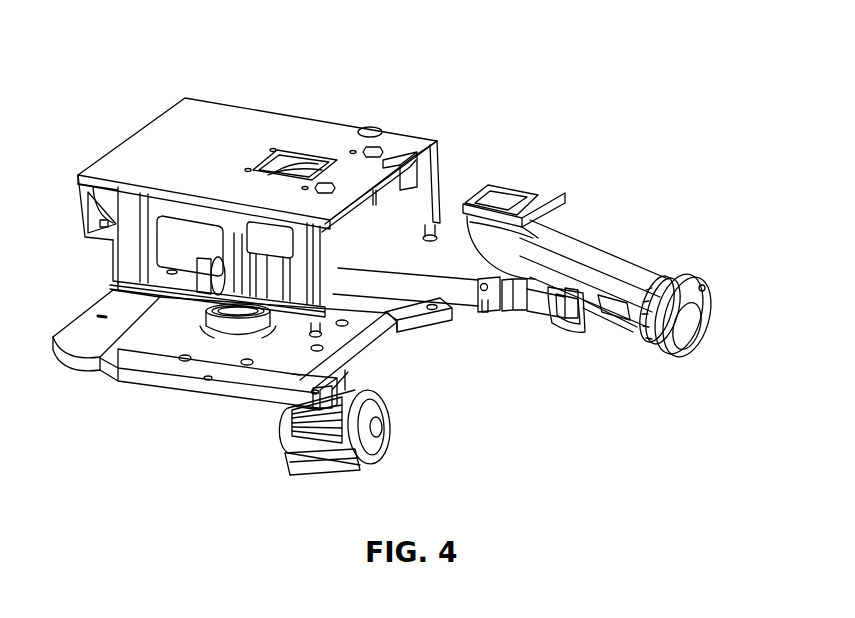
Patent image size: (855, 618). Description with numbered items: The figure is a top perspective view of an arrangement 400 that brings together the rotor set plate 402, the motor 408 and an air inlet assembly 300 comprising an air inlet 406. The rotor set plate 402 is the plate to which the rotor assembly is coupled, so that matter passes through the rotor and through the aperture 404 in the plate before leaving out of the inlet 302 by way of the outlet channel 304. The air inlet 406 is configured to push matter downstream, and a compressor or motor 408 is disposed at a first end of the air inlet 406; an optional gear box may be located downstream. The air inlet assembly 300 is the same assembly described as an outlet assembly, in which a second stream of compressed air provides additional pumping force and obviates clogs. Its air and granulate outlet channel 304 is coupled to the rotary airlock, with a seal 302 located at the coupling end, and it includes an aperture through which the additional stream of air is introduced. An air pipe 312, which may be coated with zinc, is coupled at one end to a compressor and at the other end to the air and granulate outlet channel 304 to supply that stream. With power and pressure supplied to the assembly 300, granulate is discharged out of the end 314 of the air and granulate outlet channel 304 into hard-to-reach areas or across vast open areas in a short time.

The arrangement 400 is at (130, 120).
The rotor set plate 402 is at (220, 123).
The aperture 404 is at (297, 152).
The air inlet 406 is at (615, 313).
The motor 408 is at (373, 443).
The air inlet assembly 300 is at (572, 176).
The seal 302 is at (538, 187).
The air and granulate outlet channel 304 is at (603, 263).
The air pipe 312 is at (515, 310).
The end 314 is at (690, 327).